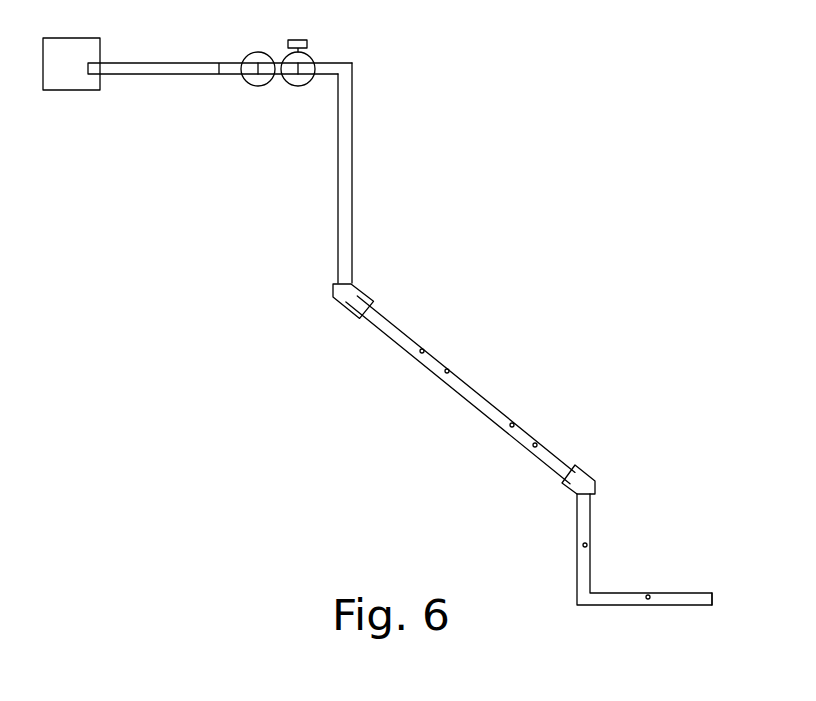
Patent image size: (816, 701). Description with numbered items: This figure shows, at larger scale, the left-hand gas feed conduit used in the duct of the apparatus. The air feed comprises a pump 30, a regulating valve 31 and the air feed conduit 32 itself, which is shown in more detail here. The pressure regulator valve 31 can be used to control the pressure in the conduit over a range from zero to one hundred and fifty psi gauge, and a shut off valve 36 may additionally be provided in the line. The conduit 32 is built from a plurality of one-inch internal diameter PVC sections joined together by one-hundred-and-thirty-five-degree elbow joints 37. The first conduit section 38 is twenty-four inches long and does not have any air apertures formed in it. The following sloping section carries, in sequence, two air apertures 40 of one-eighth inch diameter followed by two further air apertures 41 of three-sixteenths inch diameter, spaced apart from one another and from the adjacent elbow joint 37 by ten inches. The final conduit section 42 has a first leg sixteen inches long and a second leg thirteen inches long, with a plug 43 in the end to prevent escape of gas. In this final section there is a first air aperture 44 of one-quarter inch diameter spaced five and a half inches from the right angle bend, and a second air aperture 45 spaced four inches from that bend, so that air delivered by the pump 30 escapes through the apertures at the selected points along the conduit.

The pump 30 is at (70, 90).
The regulating valve 31 is at (253, 86).
The air feed conduit 32 is at (428, 232).
The shut off valve 36 is at (311, 53).
The 135-degree elbow joints 37 is at (365, 297).
The first conduit section 38 is at (344, 202).
The air apertures 40 is at (448, 369).
The further air apertures 41 is at (537, 443).
The final conduit section 42 is at (577, 528).
The plug 43 is at (714, 598).
The first air aperture 44 is at (588, 545).
The second air aperture 45 is at (651, 595).